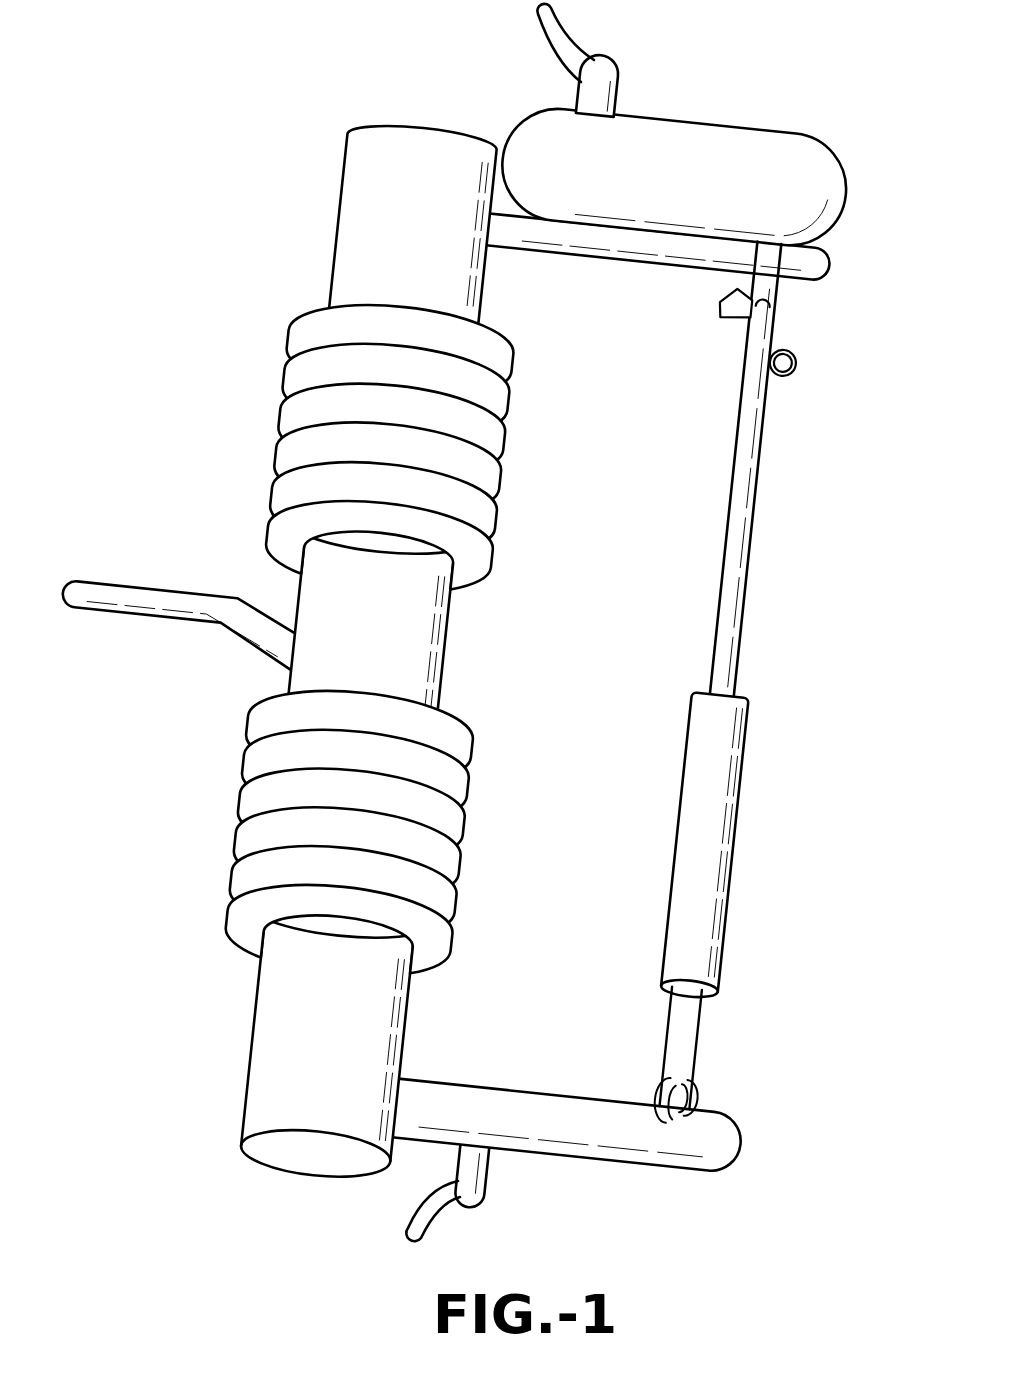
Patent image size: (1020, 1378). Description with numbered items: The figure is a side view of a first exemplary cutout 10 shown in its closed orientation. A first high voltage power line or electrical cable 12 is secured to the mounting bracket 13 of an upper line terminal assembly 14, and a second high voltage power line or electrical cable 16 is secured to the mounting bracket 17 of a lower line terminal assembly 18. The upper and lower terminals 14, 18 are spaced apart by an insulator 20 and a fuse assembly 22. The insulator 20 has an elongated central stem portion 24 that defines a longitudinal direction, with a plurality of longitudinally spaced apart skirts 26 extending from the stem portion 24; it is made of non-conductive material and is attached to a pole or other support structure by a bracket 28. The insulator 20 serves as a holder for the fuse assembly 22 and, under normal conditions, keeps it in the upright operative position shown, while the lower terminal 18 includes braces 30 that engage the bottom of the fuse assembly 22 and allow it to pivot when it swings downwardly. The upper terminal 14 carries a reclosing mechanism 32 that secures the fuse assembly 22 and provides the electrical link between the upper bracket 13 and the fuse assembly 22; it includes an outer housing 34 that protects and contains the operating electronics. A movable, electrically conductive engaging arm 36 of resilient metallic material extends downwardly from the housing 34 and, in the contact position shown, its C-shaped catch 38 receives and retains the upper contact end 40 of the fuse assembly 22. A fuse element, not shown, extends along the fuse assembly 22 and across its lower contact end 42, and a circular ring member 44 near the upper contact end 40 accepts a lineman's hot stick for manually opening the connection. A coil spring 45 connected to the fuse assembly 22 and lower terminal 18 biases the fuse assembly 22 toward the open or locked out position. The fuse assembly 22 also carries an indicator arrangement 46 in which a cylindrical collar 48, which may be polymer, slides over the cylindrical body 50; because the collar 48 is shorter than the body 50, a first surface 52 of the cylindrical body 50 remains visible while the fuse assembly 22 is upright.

The cutout 10 is at (205, 118).
The first high voltage power line 12 is at (556, 50).
The mounting bracket 13 is at (608, 100).
The upper line terminal assembly 14 is at (597, 268).
The second high voltage power line 16 is at (407, 1215).
The mounting bracket 17 is at (478, 1160).
The lower line terminal assembly 18 is at (589, 1099).
The insulator 20 is at (384, 636).
The fuse assembly 22 is at (748, 684).
The central stem portion 24 is at (383, 651).
The skirts 26 is at (518, 440).
The bracket 28 is at (150, 595).
The braces 30 is at (728, 1140).
The reclosing mechanism 32 is at (674, 147).
The outer housing 34 is at (691, 189).
The engaging arm 36 is at (776, 295).
The C-shaped catch 38 is at (743, 297).
The upper contact end 40 is at (770, 305).
The lower contact end 42 is at (662, 1093).
The circular ring member 44 is at (797, 364).
The coil spring 45 is at (705, 1090).
The indicator arrangement 46 is at (668, 794).
The cylindrical collar 48 is at (728, 870).
The cylindrical body 50 is at (740, 413).
The first surface 52 is at (738, 487).